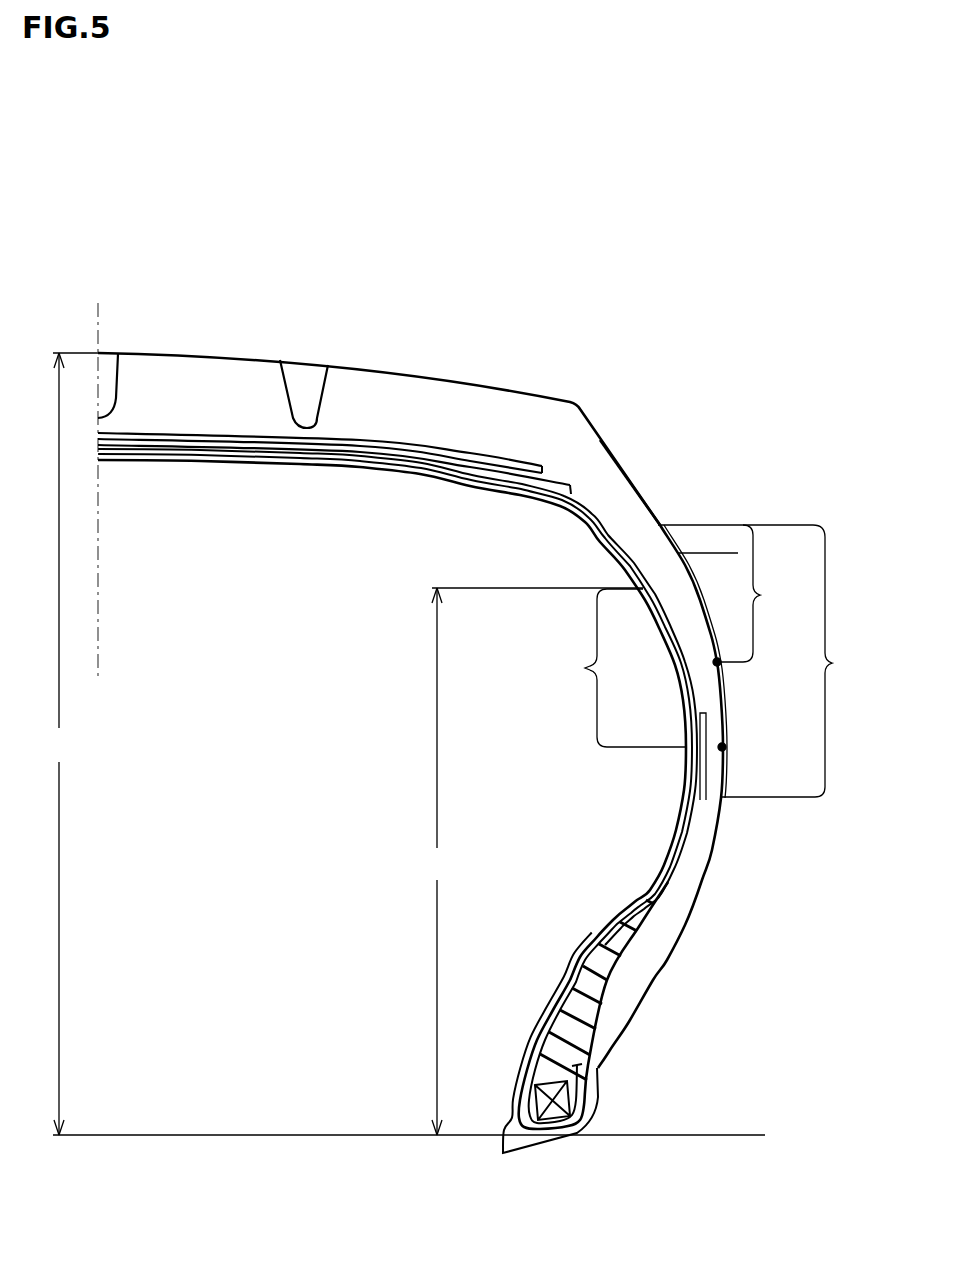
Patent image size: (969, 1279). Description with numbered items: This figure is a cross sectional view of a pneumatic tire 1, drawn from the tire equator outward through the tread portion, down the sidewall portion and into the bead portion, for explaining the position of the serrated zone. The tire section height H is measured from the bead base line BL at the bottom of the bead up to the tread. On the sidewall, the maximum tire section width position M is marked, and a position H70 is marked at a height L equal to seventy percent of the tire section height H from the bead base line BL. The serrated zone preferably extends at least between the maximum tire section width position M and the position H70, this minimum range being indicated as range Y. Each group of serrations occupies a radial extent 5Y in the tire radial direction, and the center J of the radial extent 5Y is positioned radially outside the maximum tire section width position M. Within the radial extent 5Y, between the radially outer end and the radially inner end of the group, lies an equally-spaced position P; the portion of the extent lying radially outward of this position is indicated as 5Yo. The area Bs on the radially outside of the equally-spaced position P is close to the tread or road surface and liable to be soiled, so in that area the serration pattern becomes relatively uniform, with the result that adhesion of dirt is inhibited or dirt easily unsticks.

The pneumatic tire 1 is at (642, 405).
The area on the radially outside of the equally-spaced position Bs is at (632, 483).
The equally-spaced position P is at (708, 553).
The distance from P to J 5Yo is at (767, 593).
The radial extent 5Y is at (769, 661).
The center of the radial extent J is at (720, 667).
The maximum tire section width position M is at (728, 757).
The range Y is at (621, 668).
The tire section height H is at (72, 744).
The height L is at (436, 861).
The position at a height of 70% of the tire section height H70 is at (508, 587).
The bead base line BL is at (665, 1135).